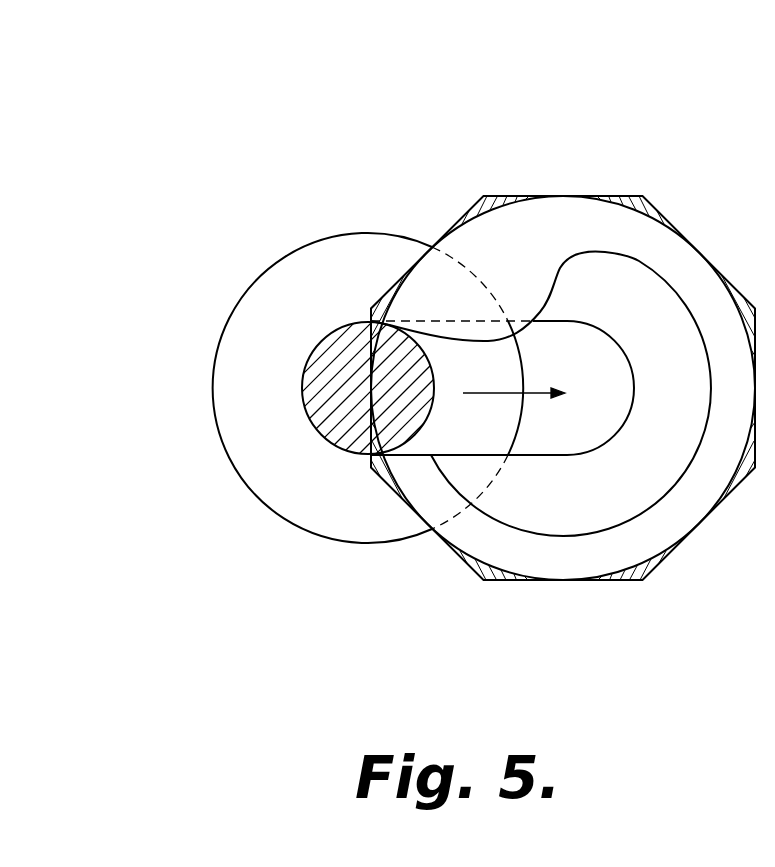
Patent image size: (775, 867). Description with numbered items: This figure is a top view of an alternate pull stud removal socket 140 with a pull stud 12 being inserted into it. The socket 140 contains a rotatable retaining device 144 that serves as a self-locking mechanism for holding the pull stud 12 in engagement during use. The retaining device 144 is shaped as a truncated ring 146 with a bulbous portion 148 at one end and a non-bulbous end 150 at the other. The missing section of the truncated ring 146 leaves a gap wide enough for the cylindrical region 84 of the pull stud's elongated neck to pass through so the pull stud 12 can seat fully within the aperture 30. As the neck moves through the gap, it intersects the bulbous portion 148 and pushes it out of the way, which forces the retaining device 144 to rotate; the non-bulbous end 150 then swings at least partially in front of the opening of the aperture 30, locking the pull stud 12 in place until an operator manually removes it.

The pull stud 12 is at (285, 292).
The aperture 30 is at (547, 442).
The cylindrical region 84 is at (320, 383).
The pull stud removal socket 140 is at (558, 152).
The rotatable retaining device 144 is at (690, 226).
The truncated ring 146 is at (633, 540).
The bulbous portion 148 is at (487, 237).
The non-bulbous end 150 is at (410, 472).